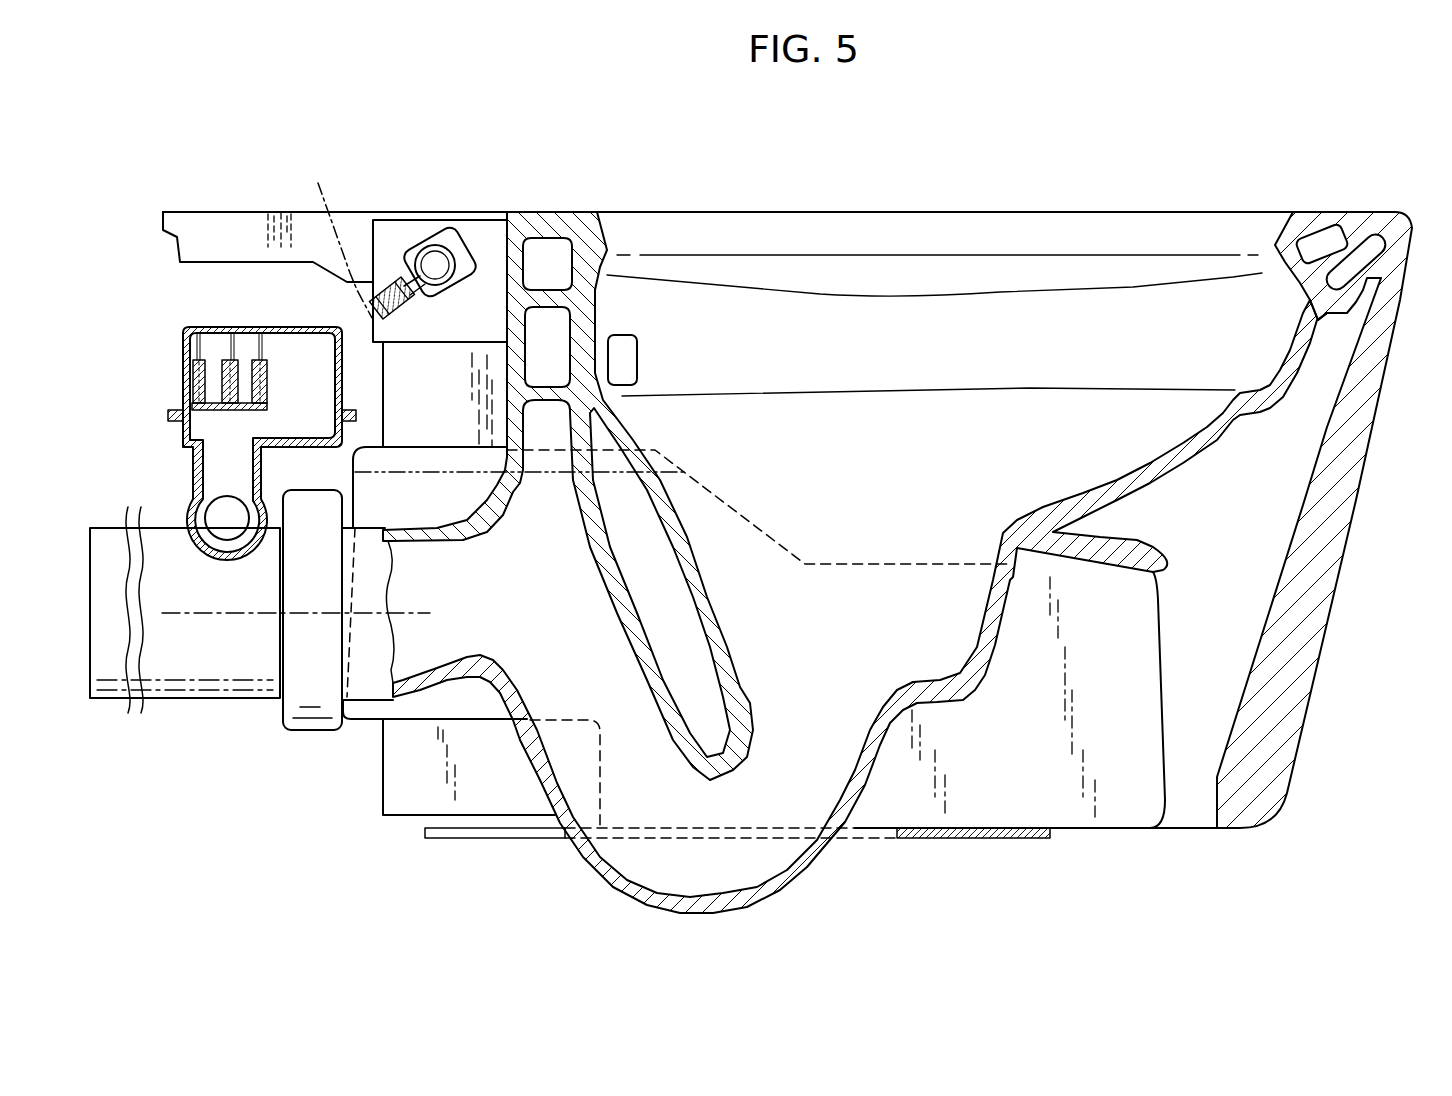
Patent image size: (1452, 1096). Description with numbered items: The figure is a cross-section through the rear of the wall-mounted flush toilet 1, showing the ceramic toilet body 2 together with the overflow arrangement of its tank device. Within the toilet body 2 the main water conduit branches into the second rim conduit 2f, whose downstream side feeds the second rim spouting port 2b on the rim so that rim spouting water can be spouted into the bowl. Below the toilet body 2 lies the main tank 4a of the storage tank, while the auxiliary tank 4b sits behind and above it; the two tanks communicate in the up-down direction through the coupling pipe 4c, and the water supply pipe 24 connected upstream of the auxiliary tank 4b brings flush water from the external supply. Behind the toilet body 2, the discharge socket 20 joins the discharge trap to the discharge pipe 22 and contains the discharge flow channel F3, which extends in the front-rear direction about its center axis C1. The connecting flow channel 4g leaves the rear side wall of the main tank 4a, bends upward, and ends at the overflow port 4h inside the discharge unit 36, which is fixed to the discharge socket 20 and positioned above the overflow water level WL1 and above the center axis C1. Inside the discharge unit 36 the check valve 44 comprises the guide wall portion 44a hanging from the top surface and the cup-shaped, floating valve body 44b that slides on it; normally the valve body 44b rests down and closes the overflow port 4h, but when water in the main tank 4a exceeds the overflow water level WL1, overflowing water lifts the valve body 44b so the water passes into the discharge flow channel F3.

The flush toilet 1 is at (895, 188).
The toilet body 2 is at (1362, 578).
The second rim spouting port 2b is at (622, 362).
The second rim conduit 2f is at (547, 348).
The main tank 4a is at (466, 690).
The auxiliary tank 4b is at (373, 243).
The coupling pipe 4c is at (438, 390).
The connecting flow channel 4g is at (227, 520).
The overflow port 4h is at (227, 440).
The discharge socket 20 is at (313, 735).
The discharge pipe 22 is at (113, 690).
The water supply pipe 24 is at (331, 236).
The discharge unit 36 is at (184, 385).
The check valve 44 is at (186, 324).
The guide wall portion 44a is at (223, 350).
The valve body 44b is at (267, 383).
The center axis C1 is at (180, 612).
The discharge flow channel F3 is at (235, 652).
The overflow water level WL1 is at (417, 472).